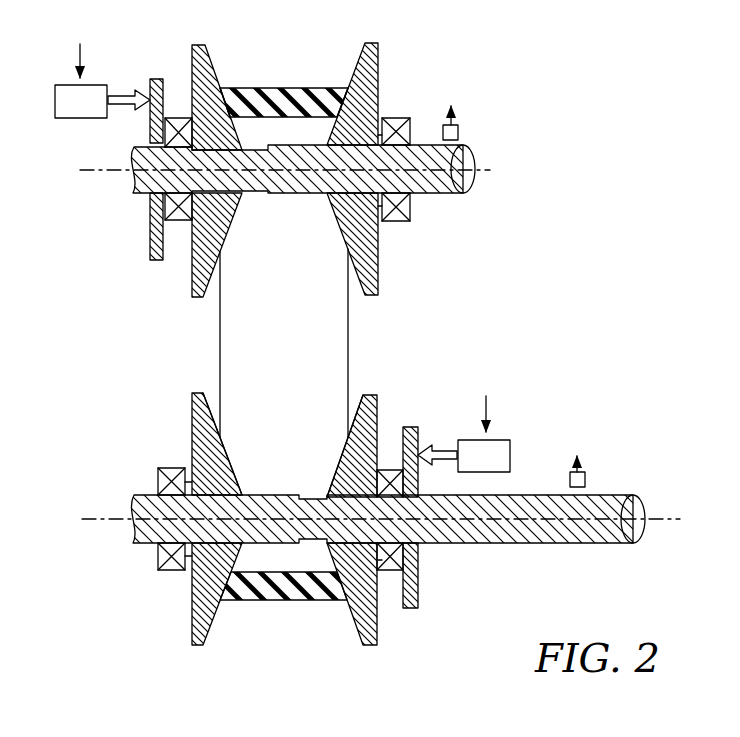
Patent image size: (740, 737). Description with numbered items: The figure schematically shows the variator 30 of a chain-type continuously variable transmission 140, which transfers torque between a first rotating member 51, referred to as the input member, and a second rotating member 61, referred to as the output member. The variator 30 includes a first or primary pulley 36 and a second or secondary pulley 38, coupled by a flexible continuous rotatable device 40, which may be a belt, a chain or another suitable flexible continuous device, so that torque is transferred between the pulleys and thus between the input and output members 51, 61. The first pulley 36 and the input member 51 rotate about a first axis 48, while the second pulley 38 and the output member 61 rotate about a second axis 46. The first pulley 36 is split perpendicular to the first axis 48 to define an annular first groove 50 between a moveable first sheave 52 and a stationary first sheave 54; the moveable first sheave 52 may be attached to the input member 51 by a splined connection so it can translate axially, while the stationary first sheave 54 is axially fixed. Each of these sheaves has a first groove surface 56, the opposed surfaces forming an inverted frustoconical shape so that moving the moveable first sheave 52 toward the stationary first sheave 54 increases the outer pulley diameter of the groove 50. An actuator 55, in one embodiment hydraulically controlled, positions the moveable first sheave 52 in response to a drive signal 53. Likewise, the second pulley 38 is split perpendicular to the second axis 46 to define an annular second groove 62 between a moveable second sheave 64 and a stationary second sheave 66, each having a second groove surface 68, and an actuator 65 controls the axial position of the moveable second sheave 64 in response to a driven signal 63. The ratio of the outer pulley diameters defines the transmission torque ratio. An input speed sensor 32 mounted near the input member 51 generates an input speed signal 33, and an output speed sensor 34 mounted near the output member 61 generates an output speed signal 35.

The continuously variable transmission 140 is at (122, 657).
The variator 30 is at (184, 609).
The CVT variator input speed sensor 32 is at (458, 131).
The input speed signal 33 is at (416, 119).
The CVT variator output speed sensor 34 is at (585, 480).
The output speed signal 35 is at (540, 472).
The first pulley 36 is at (383, 95).
The second pulley 38 is at (382, 629).
The flexible continuous rotatable device 40 is at (349, 328).
The second axis 46 is at (110, 520).
The first axis 48 is at (85, 170).
The annular first groove 50 is at (318, 82).
The first rotating member 51 is at (447, 195).
The moveable first sheave 52 is at (198, 68).
The drive signal 53 is at (69, 41).
The stationary first sheave 54 is at (378, 64).
The actuator 55 is at (70, 112).
The first groove surface 56 is at (235, 92).
The second rotating member 61 is at (458, 543).
The annular second groove 62 is at (277, 613).
The driven signal 63 is at (474, 392).
The moveable second sheave 64 is at (378, 413).
The actuator 65 is at (473, 466).
The stationary second sheave 66 is at (190, 413).
The second groove surface 68 is at (214, 418).